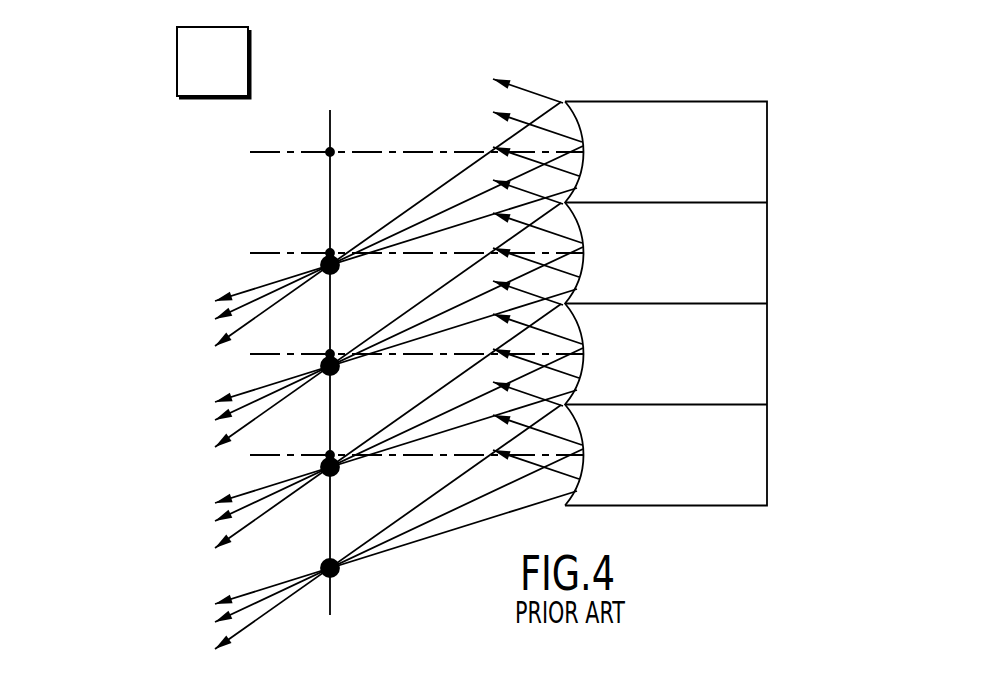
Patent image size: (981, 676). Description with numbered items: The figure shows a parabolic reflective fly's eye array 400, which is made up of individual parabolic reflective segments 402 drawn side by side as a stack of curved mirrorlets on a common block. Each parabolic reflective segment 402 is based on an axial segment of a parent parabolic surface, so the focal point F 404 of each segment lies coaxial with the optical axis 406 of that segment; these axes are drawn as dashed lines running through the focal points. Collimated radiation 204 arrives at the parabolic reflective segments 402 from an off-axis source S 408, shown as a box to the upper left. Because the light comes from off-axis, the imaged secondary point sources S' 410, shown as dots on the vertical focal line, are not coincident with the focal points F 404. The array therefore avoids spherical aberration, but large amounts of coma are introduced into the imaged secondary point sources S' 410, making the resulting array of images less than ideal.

The parabolic reflective fly's eye array 400 is at (680, 271).
The parabolic reflective segment 402 is at (667, 101).
The collimated radiation 204 is at (531, 92).
The focal point F 404 is at (332, 152).
The optical axis 406 is at (263, 153).
The off-axis source S 408 is at (250, 62).
The imaged secondary point source S' 410 is at (322, 266).